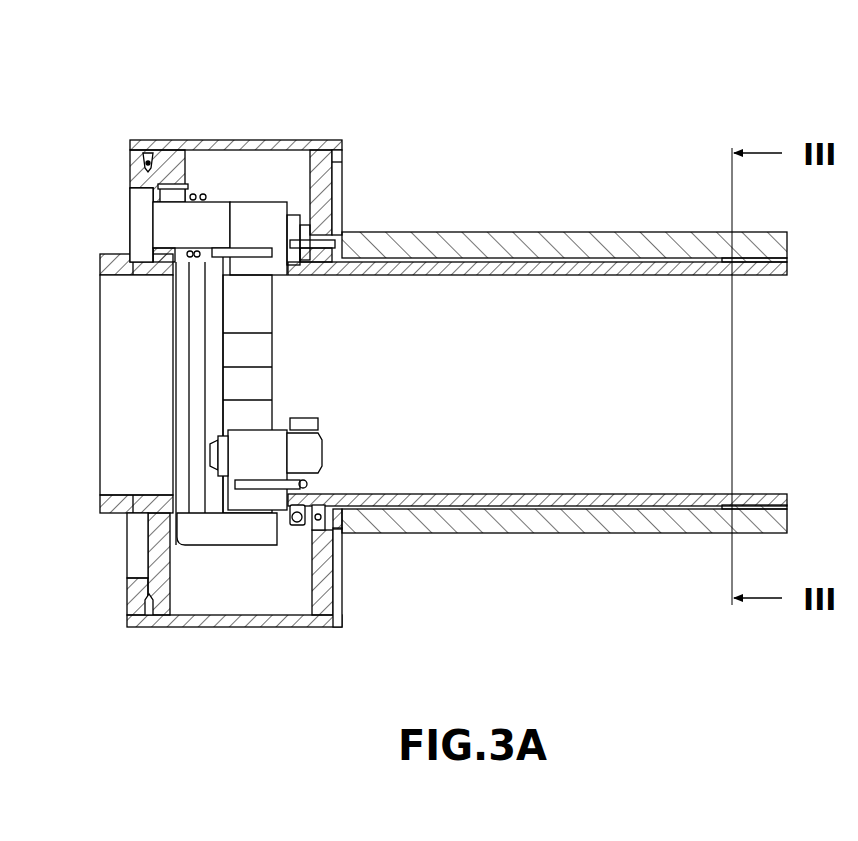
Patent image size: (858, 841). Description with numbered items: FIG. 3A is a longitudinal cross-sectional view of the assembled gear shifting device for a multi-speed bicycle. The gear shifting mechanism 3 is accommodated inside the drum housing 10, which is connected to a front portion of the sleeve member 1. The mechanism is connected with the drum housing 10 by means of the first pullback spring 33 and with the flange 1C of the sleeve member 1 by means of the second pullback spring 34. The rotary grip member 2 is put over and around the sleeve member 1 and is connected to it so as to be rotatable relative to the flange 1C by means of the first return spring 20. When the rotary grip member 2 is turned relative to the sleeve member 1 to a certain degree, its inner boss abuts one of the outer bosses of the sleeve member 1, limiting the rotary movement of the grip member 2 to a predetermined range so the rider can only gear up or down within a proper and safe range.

The sleeve member 1 is at (525, 503).
The flange 1C is at (343, 548).
The rotary grip member 2 is at (567, 248).
The gear shifting mechanism 3 is at (320, 318).
The drum housing 10 is at (280, 142).
The first return spring 20 is at (342, 233).
The first pullback spring 33 is at (172, 187).
The second pullback spring 34 is at (285, 527).